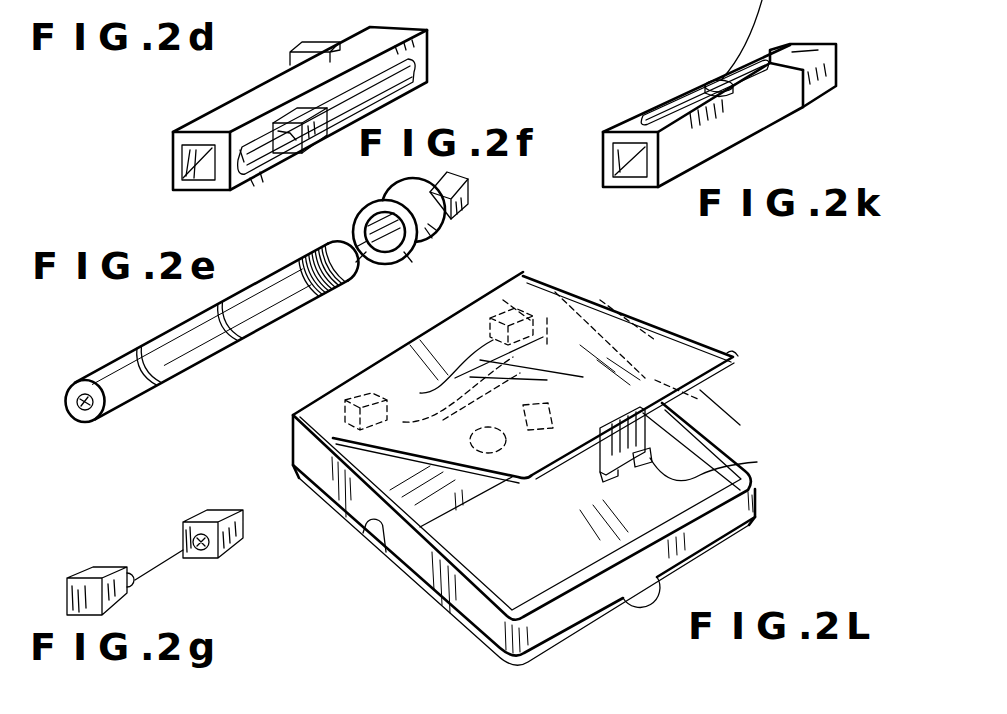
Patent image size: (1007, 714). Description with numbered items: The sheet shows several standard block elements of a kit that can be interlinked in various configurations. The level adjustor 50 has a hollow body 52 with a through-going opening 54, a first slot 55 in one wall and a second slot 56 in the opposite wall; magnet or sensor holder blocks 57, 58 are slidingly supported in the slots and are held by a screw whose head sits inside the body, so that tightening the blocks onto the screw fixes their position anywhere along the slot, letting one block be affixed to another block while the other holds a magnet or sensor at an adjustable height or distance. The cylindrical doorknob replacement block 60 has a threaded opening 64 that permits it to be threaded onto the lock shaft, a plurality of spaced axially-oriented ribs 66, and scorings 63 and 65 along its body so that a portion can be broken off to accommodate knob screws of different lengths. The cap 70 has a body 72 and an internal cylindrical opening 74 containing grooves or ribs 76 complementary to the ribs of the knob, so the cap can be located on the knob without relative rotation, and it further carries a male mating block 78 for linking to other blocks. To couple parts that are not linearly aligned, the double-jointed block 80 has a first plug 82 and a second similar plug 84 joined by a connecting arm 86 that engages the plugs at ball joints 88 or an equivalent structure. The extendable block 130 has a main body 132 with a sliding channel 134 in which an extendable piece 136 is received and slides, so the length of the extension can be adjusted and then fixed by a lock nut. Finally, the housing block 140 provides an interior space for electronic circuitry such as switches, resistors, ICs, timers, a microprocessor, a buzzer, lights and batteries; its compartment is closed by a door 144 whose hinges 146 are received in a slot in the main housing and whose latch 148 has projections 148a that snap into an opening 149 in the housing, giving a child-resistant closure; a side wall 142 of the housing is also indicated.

In FIG. 2d, the level adjustor 50 is at (62, 153).
In FIG. 2d, the hollow body 52 is at (265, 95).
In FIG. 2d, the through-going opening 54 is at (200, 150).
In FIG. 2d, the first slot 55 is at (244, 166).
In FIG. 2d, the second slot 56 is at (208, 164).
In FIG. 2d, the magnet or sensor holder block 57 is at (296, 156).
In FIG. 2d, the magnet or sensor holder block 58 is at (300, 53).
In FIG. 2e, the cylindrical doorknob replacement block 60 is at (137, 348).
In FIG. 2e, the scoring 63 is at (150, 380).
In FIG. 2e, the threaded opening 64 is at (92, 407).
In FIG. 2e, the scoring 65 is at (240, 324).
In FIG. 2e, the axially-oriented ribs 66 is at (333, 288).
In FIG. 2f, the cap 70 is at (391, 186).
In FIG. 2f, the body 72 is at (434, 226).
In FIG. 2f, the internal cylindrical opening 74 is at (417, 257).
In FIG. 2f, the grooves or ribs 76 is at (379, 258).
In FIG. 2f, the male mating block 78 is at (462, 192).
In FIG. 2g, the double-jointed block 80 is at (134, 550).
In FIG. 2g, the first plug 82 is at (212, 515).
In FIG. 2g, the second plug 84 is at (70, 594).
In FIG. 2g, the connecting arm 86 is at (160, 565).
In FIG. 2g, the ball joints 88 is at (134, 583).
In FIG. 2k, the extendable block 130 is at (710, 63).
In FIG. 2k, the main body 132 is at (748, 120).
In FIG. 2k, the sliding channel 134 is at (633, 150).
In FIG. 2k, the extendable piece 136 is at (836, 60).
In FIG. 2l, the housing block 140 is at (659, 316).
In FIG. 2l, the side wall 142 is at (717, 432).
In FIG. 2l, the door 144 is at (734, 356).
In FIG. 2l, the hinges 146 is at (535, 278).
In FIG. 2l, the latch 148 is at (598, 478).
In FIG. 2l, the projections 148a is at (757, 462).
In FIG. 2l, the opening 149 is at (665, 600).